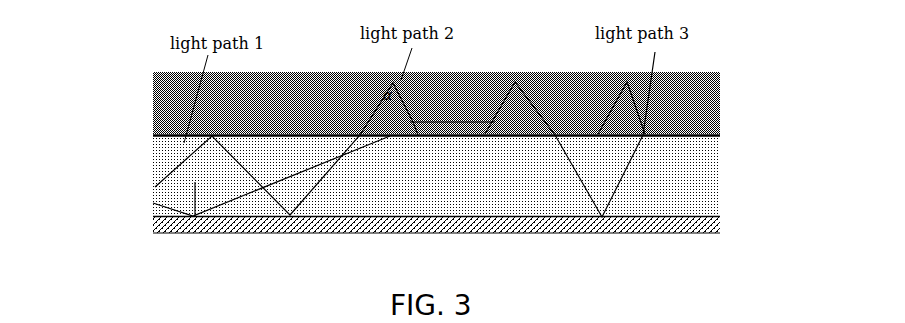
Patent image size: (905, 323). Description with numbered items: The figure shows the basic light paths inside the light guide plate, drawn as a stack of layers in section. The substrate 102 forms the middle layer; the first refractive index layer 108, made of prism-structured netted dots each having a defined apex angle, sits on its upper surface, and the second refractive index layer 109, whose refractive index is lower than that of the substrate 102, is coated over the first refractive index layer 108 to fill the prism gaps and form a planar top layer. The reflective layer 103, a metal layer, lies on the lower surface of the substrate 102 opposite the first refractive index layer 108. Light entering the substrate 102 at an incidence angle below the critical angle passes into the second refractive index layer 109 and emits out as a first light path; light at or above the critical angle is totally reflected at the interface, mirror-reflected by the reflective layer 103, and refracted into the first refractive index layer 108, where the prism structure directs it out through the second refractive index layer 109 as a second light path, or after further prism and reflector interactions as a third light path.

The second refractive index layer 109 is at (722, 103).
The first refractive index layer 108 is at (722, 135).
The substrate 102 is at (722, 177).
The reflective layer 103 is at (153, 225).